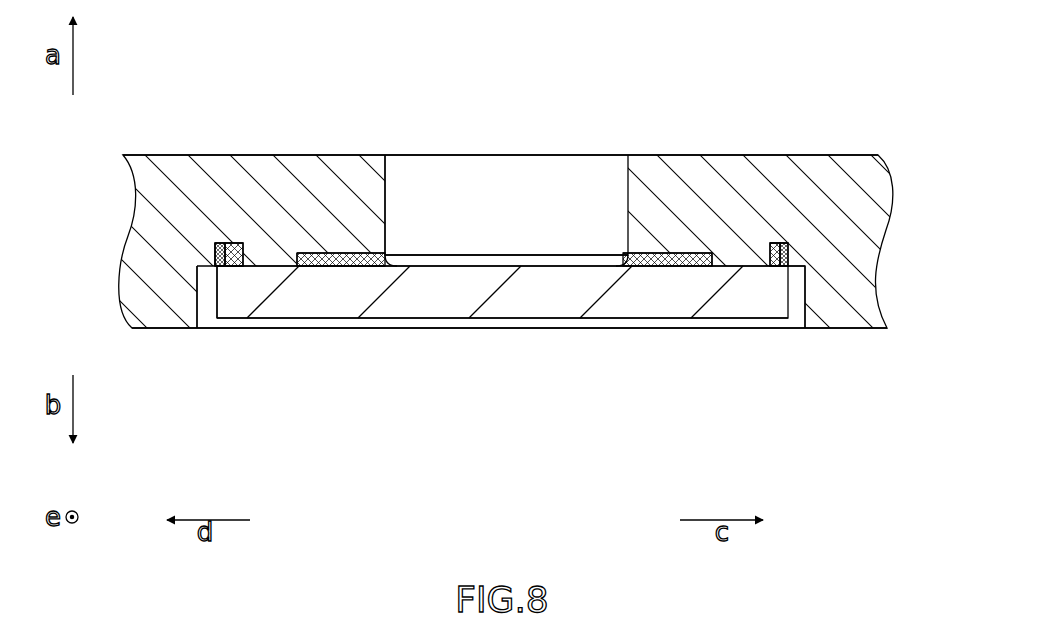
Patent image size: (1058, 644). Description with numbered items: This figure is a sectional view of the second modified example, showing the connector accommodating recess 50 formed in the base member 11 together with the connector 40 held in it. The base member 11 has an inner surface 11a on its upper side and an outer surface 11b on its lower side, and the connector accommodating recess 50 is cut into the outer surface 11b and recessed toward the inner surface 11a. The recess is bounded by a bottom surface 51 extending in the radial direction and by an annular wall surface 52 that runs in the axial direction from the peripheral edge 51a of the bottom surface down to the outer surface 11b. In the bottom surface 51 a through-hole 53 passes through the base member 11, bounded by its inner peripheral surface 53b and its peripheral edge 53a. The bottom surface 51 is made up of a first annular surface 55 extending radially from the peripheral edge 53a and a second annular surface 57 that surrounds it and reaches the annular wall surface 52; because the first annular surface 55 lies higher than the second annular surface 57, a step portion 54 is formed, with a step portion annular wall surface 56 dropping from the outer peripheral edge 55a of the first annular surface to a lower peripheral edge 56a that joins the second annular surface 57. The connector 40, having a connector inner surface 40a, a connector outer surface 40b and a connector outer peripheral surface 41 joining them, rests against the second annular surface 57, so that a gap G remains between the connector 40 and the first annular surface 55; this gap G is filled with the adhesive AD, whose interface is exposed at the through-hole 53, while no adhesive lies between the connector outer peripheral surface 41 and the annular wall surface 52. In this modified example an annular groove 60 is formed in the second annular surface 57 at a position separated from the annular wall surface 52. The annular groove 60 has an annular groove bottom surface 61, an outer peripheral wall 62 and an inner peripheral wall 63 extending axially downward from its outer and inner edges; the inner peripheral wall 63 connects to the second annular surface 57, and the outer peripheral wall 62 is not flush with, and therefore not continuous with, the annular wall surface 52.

The base member 11 is at (880, 344).
The inner surface 11a is at (857, 155).
The outer surface 11b is at (840, 329).
The connector 40 is at (441, 331).
The connector inner surface 40a is at (568, 265).
The connector outer surface 40b is at (545, 320).
The connector outer peripheral surface 41 is at (213, 286).
The connector accommodating recess 50 is at (700, 324).
The bottom surface 51 is at (745, 286).
The peripheral edge 51a is at (803, 268).
The annular wall surface 52 is at (201, 320).
The through-hole 53 is at (497, 218).
The peripheral edge of the through-hole 53a is at (386, 256).
The inner peripheral surface of the through-hole 53b is at (388, 228).
The step portion 54 is at (345, 268).
The first annular surface 55 is at (345, 262).
The outer peripheral edge of the first annular surface 55a is at (300, 263).
The step portion annular wall surface 56 is at (315, 258).
The lower peripheral edge of the step portion annular wall surface 56a is at (716, 262).
The second annular surface 57 is at (800, 268).
The annular groove 60 is at (798, 238).
The annular groove bottom surface 61 is at (222, 259).
The outer peripheral wall 62 is at (222, 267).
The inner peripheral wall 63 is at (233, 267).
The adhesive AD is at (783, 247).
The gap G is at (680, 248).